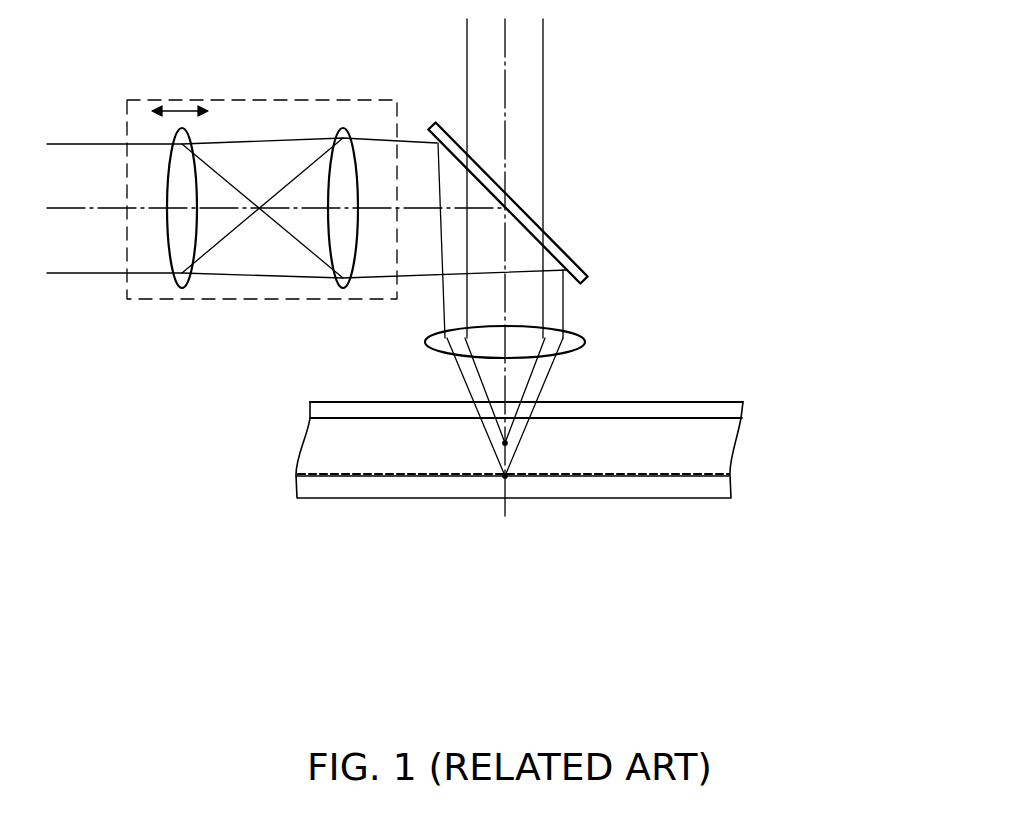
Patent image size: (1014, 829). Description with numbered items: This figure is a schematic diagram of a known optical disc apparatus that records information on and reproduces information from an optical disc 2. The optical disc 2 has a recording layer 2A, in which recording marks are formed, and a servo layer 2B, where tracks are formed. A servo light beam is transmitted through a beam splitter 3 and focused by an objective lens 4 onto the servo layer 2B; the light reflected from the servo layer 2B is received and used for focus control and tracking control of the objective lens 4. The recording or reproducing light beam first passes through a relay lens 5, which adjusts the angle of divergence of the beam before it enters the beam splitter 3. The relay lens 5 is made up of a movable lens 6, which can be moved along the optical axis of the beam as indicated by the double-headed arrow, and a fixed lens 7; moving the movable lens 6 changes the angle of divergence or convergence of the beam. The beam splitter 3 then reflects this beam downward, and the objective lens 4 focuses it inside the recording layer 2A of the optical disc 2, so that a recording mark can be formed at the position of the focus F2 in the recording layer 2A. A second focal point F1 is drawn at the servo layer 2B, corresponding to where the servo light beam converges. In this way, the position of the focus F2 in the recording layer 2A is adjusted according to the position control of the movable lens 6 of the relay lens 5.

The optical disc 2 is at (622, 500).
The recording layer 2A is at (723, 435).
The servo layer 2B is at (728, 478).
The beam splitter 3 is at (586, 281).
The objective lens 4 is at (586, 342).
The relay lens 5 is at (259, 100).
The movable lens 6 is at (181, 290).
The fixed lens 7 is at (343, 290).
The focal point on servo layer F1 is at (505, 477).
The focus F2 is at (505, 443).